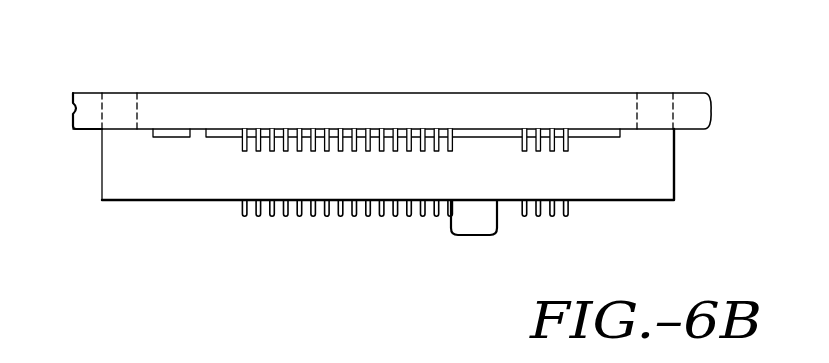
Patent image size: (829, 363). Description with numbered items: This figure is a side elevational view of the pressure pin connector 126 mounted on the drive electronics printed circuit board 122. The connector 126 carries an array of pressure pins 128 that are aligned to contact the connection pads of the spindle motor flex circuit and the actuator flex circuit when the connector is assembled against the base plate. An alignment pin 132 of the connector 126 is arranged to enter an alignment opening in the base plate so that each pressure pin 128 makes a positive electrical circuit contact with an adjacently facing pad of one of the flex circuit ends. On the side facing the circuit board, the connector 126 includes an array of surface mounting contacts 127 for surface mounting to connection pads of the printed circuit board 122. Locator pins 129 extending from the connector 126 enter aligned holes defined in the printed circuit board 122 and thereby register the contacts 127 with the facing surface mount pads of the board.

The printed circuit board 122 is at (301, 108).
The pressure pin connector 126 is at (657, 162).
The surface mounting contacts 127 is at (411, 130).
The pressure pins 128 is at (288, 215).
The locator pins 129 is at (120, 116).
The alignment pin 132 is at (475, 222).